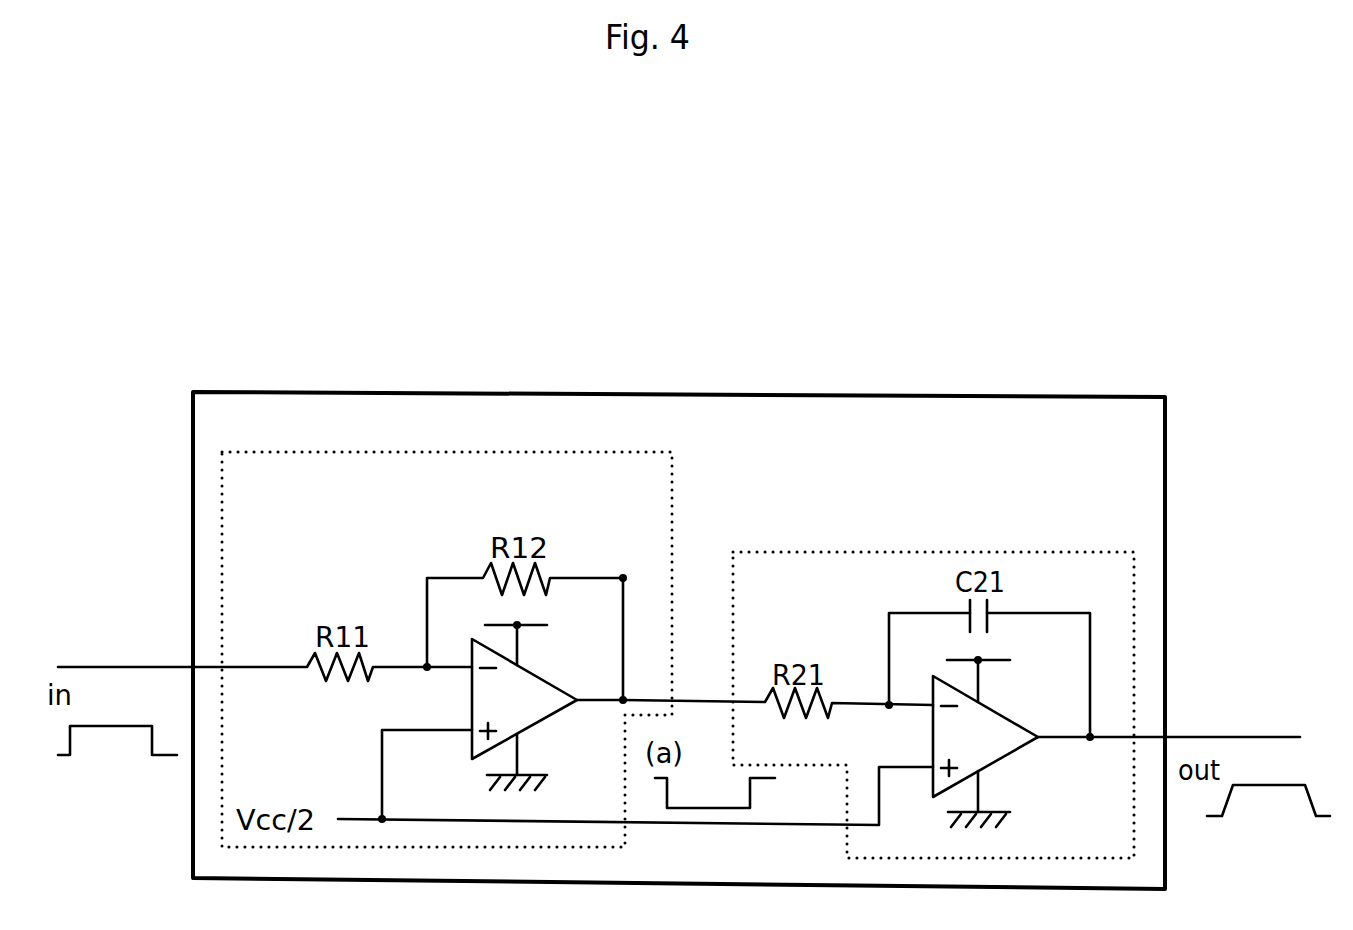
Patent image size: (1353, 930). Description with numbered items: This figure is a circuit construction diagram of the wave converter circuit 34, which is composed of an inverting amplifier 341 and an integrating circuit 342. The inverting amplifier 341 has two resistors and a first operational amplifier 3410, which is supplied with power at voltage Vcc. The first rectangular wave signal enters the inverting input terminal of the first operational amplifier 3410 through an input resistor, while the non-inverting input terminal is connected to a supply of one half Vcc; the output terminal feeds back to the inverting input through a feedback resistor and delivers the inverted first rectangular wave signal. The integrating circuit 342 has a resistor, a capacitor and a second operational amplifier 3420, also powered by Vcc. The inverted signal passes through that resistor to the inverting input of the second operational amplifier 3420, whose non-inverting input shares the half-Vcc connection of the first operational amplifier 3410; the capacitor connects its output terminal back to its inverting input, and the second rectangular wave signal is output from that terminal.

The wave converter circuit 34 is at (614, 395).
The inverting amplifier 341 is at (672, 457).
The integrating circuit 342 is at (866, 550).
The first operational amplifier 3410 is at (472, 718).
The second operational amplifier 3420 is at (933, 752).